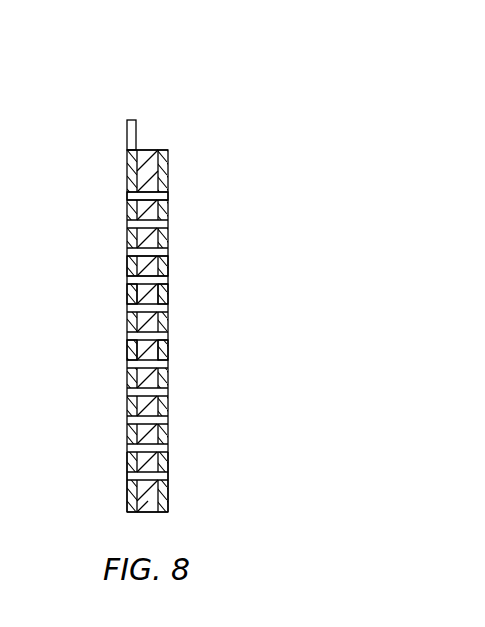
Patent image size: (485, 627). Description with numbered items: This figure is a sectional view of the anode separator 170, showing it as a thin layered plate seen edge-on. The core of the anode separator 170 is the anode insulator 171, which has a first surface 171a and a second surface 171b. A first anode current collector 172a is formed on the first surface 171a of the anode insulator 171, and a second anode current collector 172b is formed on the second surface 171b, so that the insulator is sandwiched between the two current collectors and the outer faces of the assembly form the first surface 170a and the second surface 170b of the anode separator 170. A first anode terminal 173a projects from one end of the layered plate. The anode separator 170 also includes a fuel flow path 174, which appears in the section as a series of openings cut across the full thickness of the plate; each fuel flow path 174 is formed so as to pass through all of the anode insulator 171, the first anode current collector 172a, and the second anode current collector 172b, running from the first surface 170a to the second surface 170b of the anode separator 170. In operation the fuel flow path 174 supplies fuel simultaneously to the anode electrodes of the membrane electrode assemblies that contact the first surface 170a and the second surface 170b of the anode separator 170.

The anode separator 170 is at (197, 95).
The first surface of the anode separator 170a is at (128, 470).
The second surface of the anode separator 170b is at (168, 470).
The anode insulator 171 is at (163, 263).
The first surface of the anode insulator 171a is at (129, 350).
The second surface of the anode insulator 171b is at (166, 349).
The first anode current collector 172a is at (129, 292).
The second anode current collector 172b is at (167, 292).
The first anode terminal 173a is at (132, 141).
The fuel flow path 174 is at (168, 193).